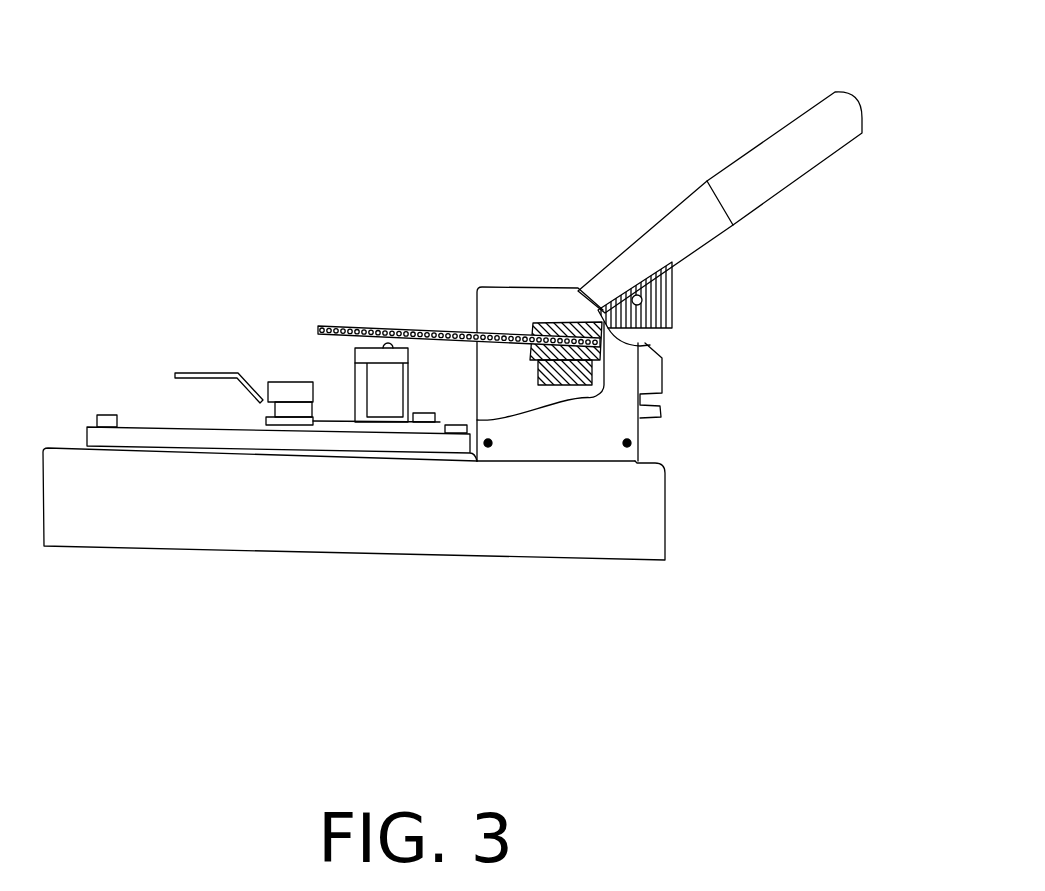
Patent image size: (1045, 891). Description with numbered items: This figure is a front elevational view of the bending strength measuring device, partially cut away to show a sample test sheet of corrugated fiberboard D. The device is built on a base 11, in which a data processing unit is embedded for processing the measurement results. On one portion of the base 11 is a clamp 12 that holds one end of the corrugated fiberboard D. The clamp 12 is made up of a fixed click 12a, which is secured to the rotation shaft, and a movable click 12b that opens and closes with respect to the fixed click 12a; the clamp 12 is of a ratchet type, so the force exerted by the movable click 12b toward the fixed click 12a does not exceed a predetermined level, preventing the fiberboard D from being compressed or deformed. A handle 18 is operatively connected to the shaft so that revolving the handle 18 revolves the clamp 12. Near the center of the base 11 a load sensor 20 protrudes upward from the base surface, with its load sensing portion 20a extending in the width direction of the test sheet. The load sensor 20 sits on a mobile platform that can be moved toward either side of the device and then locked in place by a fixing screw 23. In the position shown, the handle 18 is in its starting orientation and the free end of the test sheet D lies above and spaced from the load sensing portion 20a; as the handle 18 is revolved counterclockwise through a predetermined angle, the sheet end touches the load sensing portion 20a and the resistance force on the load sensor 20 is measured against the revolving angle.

The base 11 is at (645, 530).
The clamp 12 is at (805, 310).
The fixed click 12a is at (673, 299).
The movable click 12b is at (612, 347).
The handle 18 is at (668, 217).
The load sensor 20 is at (355, 380).
The load sensing portion 20a is at (400, 343).
The fixing screw 23 is at (295, 392).
The corrugated fiberboard D is at (345, 327).